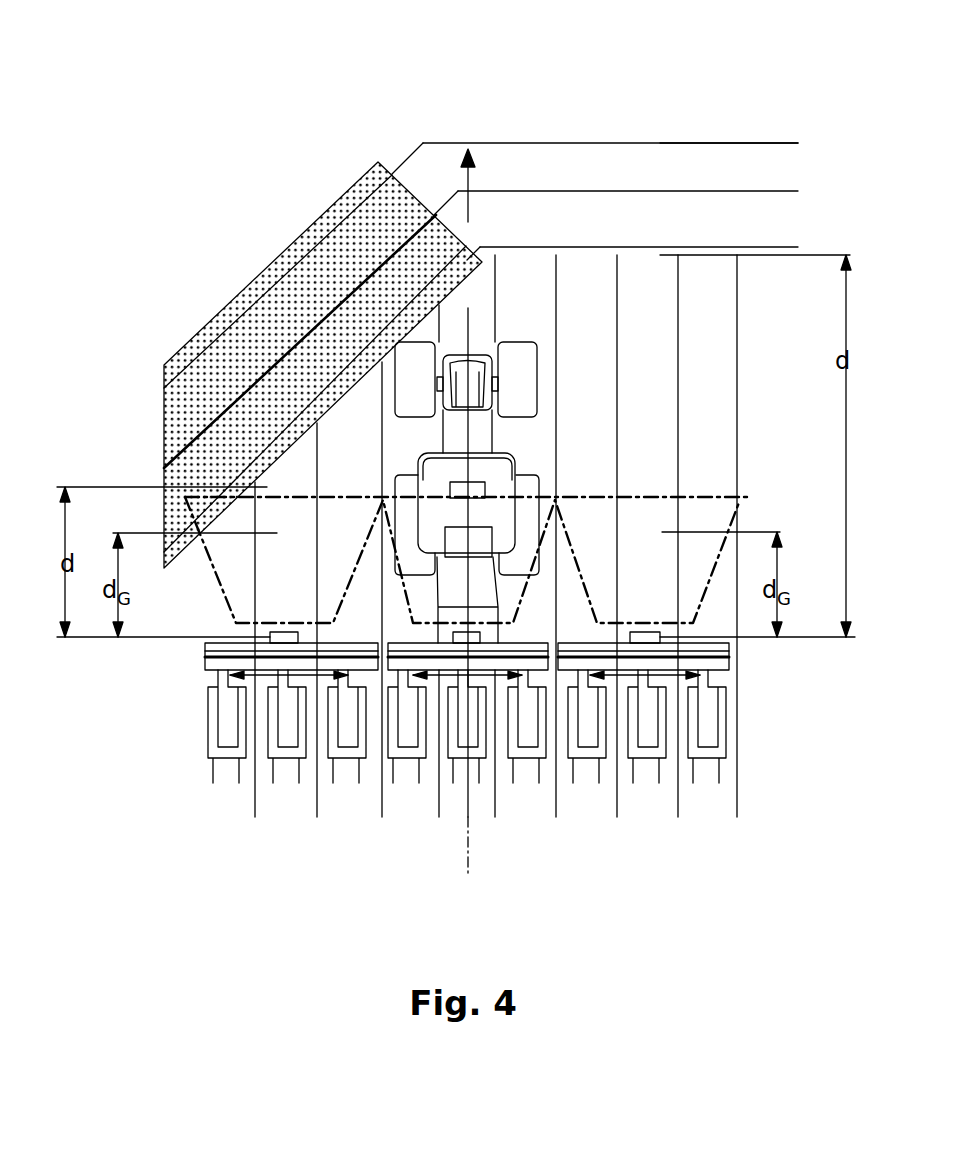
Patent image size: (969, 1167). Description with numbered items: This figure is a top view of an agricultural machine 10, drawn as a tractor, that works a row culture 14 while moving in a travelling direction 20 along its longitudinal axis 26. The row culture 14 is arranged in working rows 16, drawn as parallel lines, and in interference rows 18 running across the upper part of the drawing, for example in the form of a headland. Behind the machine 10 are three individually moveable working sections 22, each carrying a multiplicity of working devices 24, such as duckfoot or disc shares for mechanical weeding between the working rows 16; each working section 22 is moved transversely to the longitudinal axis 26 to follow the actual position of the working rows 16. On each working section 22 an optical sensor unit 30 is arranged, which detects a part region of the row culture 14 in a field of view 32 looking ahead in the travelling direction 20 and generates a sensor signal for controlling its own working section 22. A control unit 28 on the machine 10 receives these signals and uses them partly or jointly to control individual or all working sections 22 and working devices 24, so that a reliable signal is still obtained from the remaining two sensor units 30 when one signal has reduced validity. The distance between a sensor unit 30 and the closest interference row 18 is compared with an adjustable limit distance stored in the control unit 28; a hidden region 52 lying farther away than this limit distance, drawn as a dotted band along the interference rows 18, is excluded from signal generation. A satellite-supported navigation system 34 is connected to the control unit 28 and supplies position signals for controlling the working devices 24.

The agricultural machine 10 is at (527, 277).
The row culture 14 is at (283, 152).
The working rows 16 is at (737, 308).
The interference rows 18 is at (745, 143).
The travelling direction 20 is at (473, 180).
The working section 22 is at (232, 662).
The working devices 24 is at (225, 730).
The longitudinal axis 26 is at (470, 820).
The control unit 28 is at (475, 540).
The optical sensor unit 30 is at (270, 641).
The field of view 32 is at (413, 620).
The satellite-supported navigation system 34 is at (477, 488).
The hidden region 52 is at (295, 293).